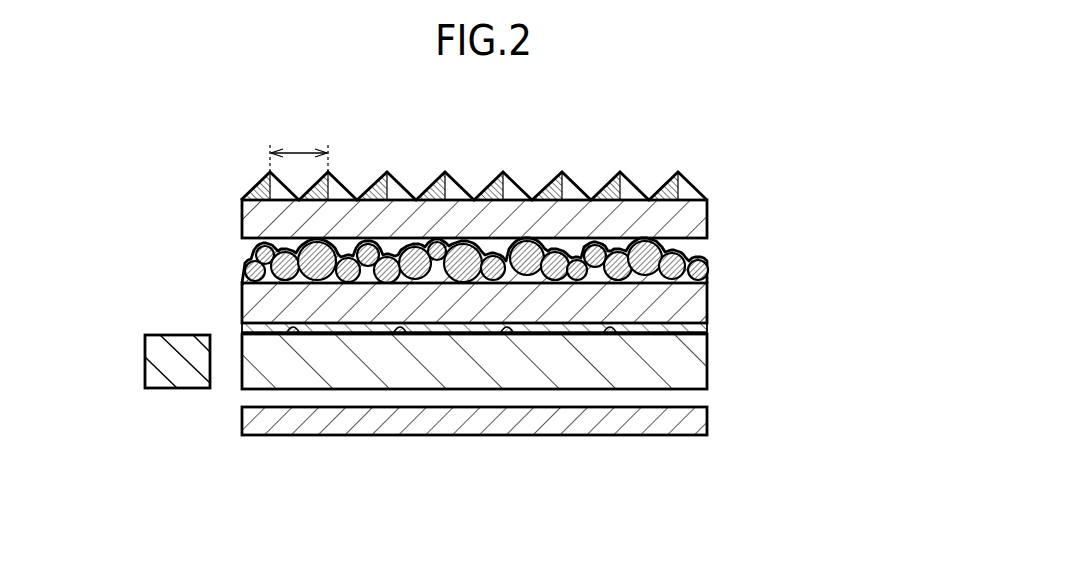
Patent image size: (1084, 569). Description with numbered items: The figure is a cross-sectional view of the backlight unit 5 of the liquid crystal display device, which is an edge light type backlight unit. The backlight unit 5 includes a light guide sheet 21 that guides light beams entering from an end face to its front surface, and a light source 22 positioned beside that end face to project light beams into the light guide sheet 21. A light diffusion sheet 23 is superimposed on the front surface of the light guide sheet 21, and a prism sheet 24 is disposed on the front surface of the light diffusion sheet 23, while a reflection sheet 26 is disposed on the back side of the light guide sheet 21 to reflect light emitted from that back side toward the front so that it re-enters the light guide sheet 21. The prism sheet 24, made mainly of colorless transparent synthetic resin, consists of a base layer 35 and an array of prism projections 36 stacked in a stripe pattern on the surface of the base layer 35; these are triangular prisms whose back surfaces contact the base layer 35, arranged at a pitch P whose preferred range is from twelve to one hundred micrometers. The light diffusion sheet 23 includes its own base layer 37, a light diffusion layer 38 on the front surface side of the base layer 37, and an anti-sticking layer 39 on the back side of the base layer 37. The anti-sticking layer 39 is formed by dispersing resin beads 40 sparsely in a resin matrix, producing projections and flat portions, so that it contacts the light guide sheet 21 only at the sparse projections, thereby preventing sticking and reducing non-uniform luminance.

The backlight unit 5 is at (704, 164).
The light guide sheet 21 is at (708, 365).
The light source 22 is at (150, 367).
The light diffusion sheet 23 is at (716, 295).
The prism sheet 24 is at (716, 211).
The reflection sheet 26 is at (708, 421).
The base layer 35 is at (243, 213).
The prism projections 36 is at (250, 186).
The base layer 37 is at (242, 300).
The light diffusion layer 38 is at (238, 256).
The anti-sticking layer 39 is at (242, 329).
The resin beads 40 is at (507, 334).